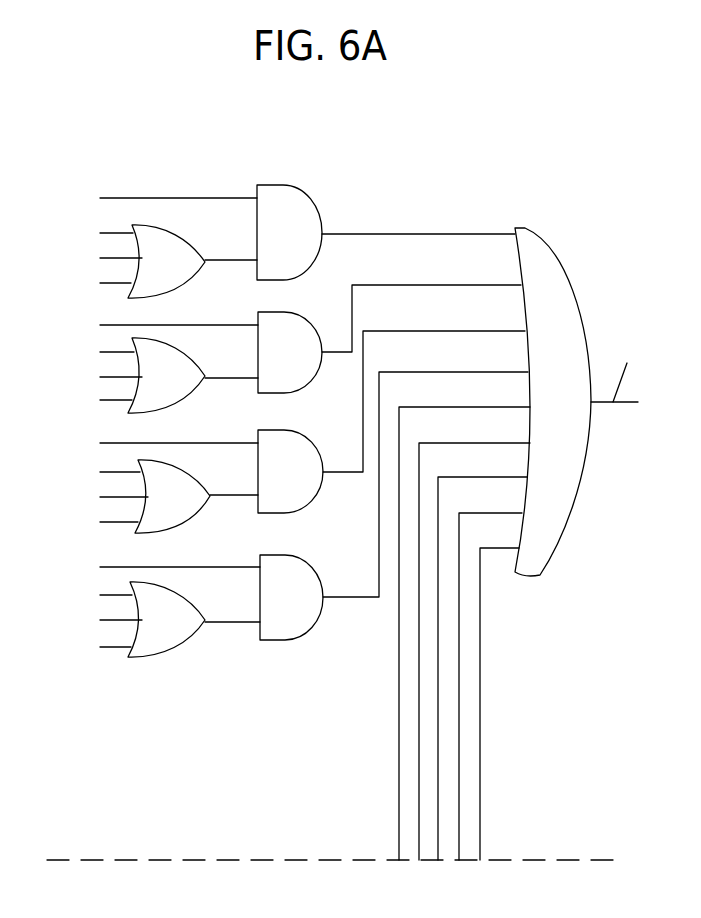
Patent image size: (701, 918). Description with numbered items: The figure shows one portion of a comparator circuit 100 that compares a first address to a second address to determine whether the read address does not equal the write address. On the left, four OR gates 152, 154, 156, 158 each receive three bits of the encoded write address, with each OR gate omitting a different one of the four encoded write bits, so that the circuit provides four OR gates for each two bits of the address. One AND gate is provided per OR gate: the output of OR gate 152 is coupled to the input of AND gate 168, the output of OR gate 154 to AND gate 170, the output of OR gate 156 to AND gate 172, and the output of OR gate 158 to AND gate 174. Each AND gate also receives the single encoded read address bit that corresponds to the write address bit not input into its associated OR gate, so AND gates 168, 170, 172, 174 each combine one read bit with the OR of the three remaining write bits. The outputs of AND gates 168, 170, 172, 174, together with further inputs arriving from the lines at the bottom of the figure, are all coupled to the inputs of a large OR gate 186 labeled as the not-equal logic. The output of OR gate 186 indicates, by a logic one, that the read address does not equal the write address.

The comparator circuit 100 is at (456, 185).
The OR gate 152 is at (190, 275).
The OR gate 154 is at (190, 392).
The OR gate 156 is at (193, 513).
The OR gate 158 is at (191, 638).
The AND gate 168 is at (308, 242).
The AND gate 170 is at (308, 363).
The AND gate 172 is at (307, 487).
The AND gate 174 is at (309, 610).
The OR gate 186 is at (581, 400).